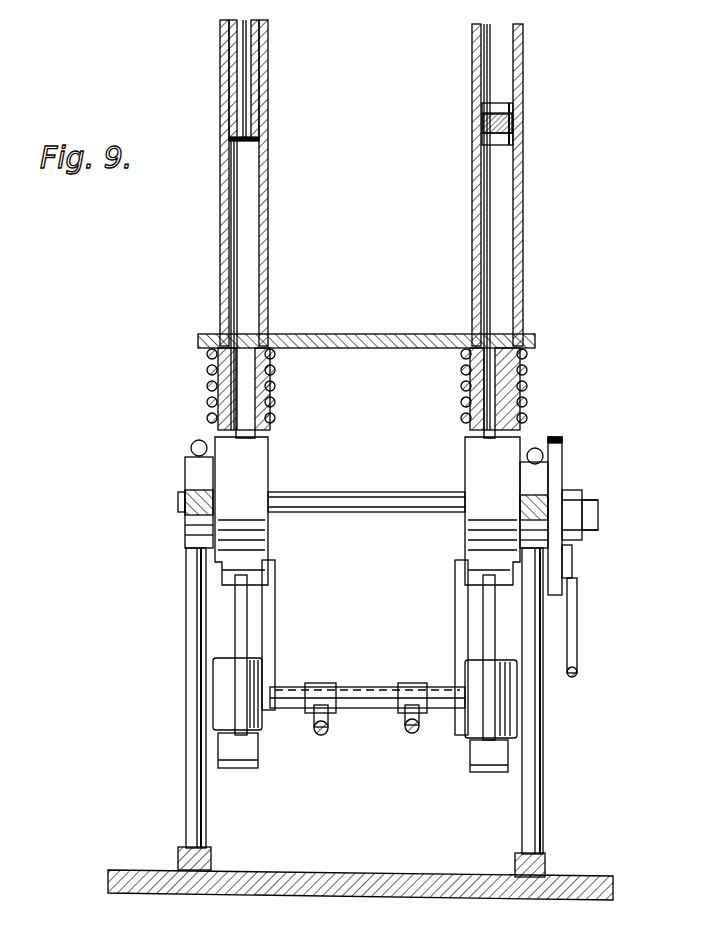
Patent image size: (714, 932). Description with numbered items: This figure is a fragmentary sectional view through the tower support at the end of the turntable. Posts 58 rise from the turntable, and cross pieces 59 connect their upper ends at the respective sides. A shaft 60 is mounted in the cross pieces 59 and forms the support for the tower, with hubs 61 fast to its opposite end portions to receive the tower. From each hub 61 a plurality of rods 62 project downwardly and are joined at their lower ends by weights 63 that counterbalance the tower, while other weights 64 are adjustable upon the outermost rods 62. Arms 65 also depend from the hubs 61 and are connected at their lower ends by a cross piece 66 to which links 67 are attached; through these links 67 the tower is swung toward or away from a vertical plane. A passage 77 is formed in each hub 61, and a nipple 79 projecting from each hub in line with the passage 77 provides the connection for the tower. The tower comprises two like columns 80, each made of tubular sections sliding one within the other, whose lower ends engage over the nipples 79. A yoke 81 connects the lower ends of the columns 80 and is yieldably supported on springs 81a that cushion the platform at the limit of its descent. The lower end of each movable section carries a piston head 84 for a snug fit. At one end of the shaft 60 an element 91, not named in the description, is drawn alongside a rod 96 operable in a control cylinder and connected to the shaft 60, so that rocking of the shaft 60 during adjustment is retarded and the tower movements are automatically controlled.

The posts 58 is at (190, 801).
The cross pieces 59 is at (205, 532).
The shaft 60 is at (352, 516).
The hubs 61 is at (255, 470).
The rods 62 is at (242, 608).
The weights 63 is at (246, 768).
The weights 64 is at (222, 700).
The arms 65 is at (272, 636).
The cross piece 66 is at (292, 695).
The links 67 is at (405, 732).
The passage 77 is at (258, 437).
The nipple 79 is at (238, 378).
The columns 80 is at (367, 225).
The yoke 81 is at (376, 348).
The springs 81a is at (277, 403).
The piston head 84 is at (261, 134).
The lever 91 is at (557, 437).
The rod 96 is at (578, 489).